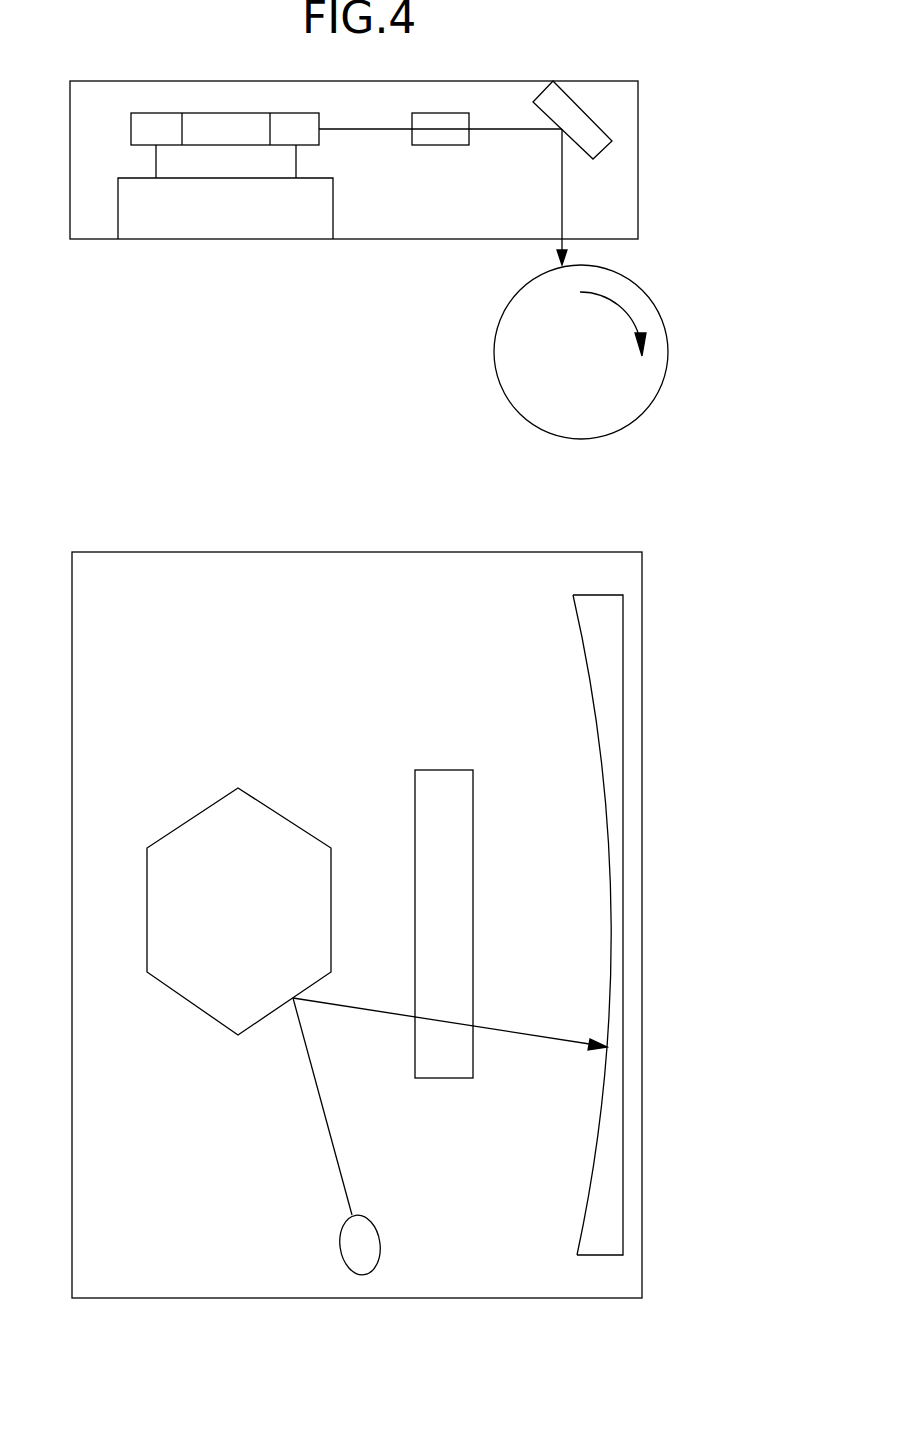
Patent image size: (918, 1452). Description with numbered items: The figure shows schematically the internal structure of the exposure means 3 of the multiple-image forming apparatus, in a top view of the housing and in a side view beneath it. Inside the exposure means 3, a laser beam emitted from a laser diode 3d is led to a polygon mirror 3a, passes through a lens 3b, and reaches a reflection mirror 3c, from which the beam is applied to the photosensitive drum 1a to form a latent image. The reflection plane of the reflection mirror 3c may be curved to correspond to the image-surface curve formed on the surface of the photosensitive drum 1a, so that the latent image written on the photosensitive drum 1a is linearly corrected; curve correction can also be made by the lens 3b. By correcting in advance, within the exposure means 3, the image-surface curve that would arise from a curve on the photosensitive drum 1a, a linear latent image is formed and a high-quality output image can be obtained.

The exposure means 3 is at (367, 239).
The polygon mirror 3a is at (225, 133).
The lens 3b is at (438, 145).
The reflection mirror 3c is at (603, 152).
The laser diode 3d is at (380, 1247).
The photosensitive drum 1a is at (512, 405).